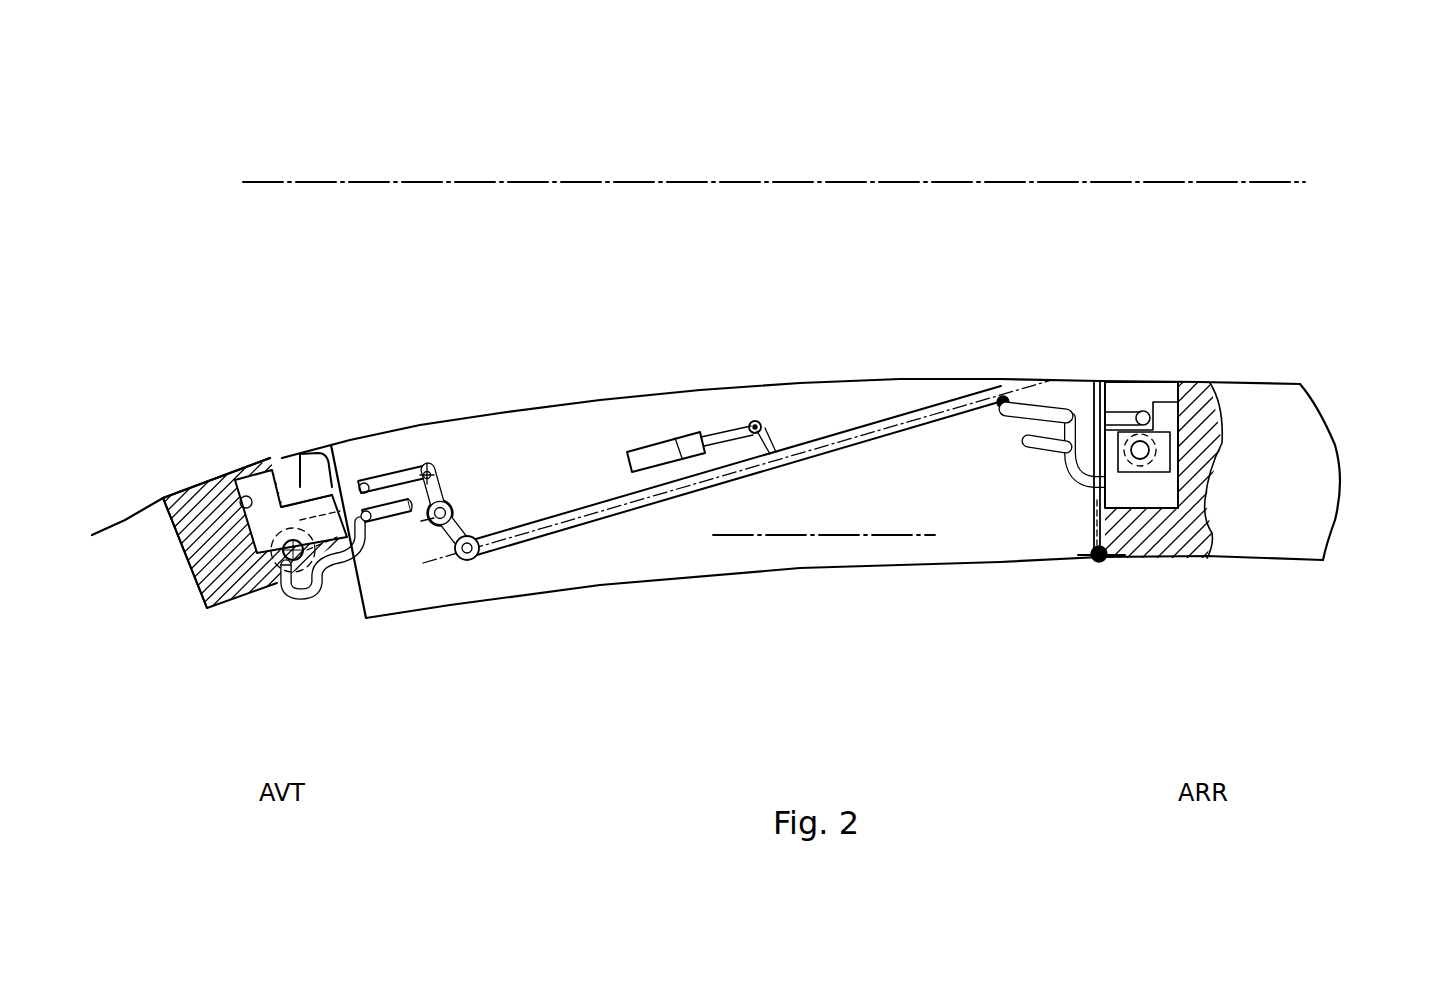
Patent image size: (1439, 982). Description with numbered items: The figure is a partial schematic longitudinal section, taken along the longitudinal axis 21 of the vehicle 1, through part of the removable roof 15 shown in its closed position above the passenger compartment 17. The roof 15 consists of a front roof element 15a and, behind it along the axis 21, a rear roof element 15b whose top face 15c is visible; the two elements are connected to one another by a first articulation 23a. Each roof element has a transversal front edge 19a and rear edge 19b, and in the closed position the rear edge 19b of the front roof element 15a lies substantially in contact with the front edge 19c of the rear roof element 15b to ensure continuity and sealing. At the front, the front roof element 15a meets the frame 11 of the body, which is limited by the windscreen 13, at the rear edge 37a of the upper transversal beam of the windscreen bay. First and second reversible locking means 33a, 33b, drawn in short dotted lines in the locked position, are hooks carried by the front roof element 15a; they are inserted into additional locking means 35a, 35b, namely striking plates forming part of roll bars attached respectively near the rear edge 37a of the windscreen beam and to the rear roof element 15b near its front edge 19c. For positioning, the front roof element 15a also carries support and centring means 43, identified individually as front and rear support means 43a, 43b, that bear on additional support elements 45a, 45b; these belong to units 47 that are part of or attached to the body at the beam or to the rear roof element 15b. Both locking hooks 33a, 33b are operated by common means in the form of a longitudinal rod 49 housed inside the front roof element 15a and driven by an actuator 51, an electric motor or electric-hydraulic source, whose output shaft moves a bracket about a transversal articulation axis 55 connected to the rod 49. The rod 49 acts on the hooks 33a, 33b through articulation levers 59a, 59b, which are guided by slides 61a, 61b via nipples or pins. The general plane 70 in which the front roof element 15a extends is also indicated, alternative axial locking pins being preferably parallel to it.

The vehicle 1 is at (760, 345).
The frame 11 is at (188, 468).
The windscreen 13 is at (136, 528).
The roof 15 is at (430, 435).
The front roof element 15a is at (872, 395).
The rear roof element 15b is at (1273, 410).
The top face 15c is at (1300, 384).
The passenger compartment 17 is at (690, 664).
The front edge 19a is at (300, 453).
The rear edge 19b is at (1102, 380).
The front edge of the rear roof element 19c is at (1142, 410).
The longitudinal axis 21 is at (620, 180).
The first articulation 23a is at (1100, 562).
The first reversible locking means 33a is at (334, 582).
The second reversible locking means 33b is at (1076, 482).
The front additional locking means 35a is at (270, 462).
The rear additional locking means 35b is at (1168, 440).
The rear edge of the upper transversal beam 37a is at (168, 540).
The rear bracket 43 is at (1170, 405).
The front support and centring means 43a is at (280, 597).
The rear support and centring means 43b is at (1163, 397).
The front additional support element 45a is at (340, 490).
The rear additional support element 45b is at (1165, 440).
The units 47 is at (197, 588).
The longitudinal rod 49 is at (622, 518).
The actuator 51 is at (684, 447).
The transversal articulation axis 55 is at (763, 424).
The front articulation lever 59a is at (460, 474).
The rear articulation lever 59b is at (1059, 386).
The front slide 61a is at (391, 531).
The rear slide 61b is at (1010, 436).
The general plane 70 is at (846, 535).